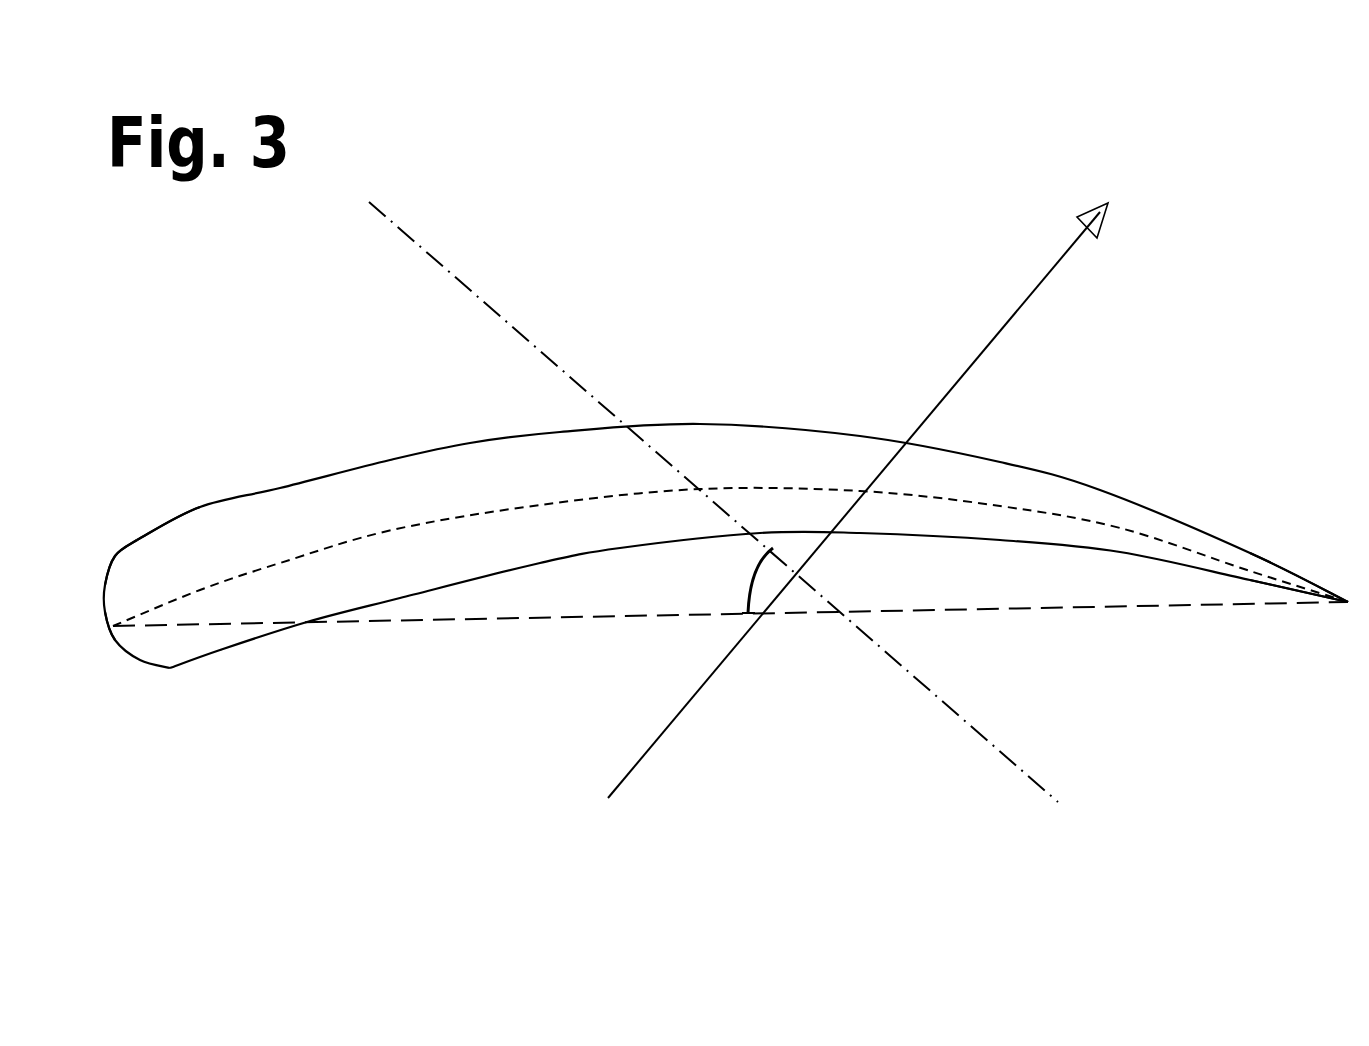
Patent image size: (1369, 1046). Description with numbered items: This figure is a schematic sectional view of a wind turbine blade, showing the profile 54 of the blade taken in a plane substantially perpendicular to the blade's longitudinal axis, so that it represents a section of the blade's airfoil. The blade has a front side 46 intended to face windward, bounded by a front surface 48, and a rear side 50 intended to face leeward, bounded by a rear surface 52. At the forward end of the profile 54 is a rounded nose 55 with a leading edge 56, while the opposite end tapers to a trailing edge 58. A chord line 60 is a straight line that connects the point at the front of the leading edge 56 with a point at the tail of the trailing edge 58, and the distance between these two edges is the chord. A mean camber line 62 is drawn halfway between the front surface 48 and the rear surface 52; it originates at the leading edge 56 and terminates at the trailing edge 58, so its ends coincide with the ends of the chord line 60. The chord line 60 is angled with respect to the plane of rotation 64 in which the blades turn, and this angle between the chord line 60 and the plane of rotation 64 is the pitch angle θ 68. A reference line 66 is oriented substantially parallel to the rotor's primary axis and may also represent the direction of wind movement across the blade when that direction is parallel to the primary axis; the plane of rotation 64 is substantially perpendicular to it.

The front side 46 is at (313, 638).
The front surface 48 is at (203, 662).
The rear side 50 is at (716, 527).
The rear surface 52 is at (162, 533).
The profile 54 is at (565, 463).
The nose 55 is at (132, 580).
The leading edge 56 is at (112, 627).
The trailing edge 58 is at (1350, 598).
The chord line 60 is at (478, 622).
The mean camber line 62 is at (392, 530).
The plane of rotation 64 is at (962, 716).
The reference line 66 is at (672, 728).
The pitch angle θ 68 is at (758, 563).